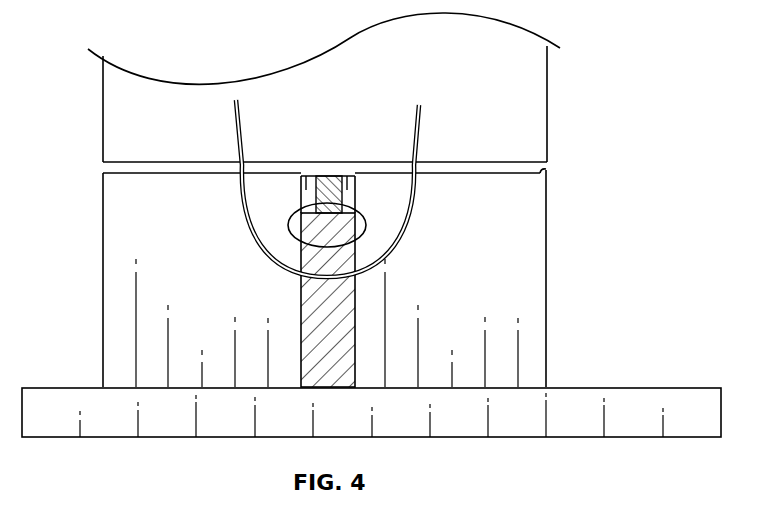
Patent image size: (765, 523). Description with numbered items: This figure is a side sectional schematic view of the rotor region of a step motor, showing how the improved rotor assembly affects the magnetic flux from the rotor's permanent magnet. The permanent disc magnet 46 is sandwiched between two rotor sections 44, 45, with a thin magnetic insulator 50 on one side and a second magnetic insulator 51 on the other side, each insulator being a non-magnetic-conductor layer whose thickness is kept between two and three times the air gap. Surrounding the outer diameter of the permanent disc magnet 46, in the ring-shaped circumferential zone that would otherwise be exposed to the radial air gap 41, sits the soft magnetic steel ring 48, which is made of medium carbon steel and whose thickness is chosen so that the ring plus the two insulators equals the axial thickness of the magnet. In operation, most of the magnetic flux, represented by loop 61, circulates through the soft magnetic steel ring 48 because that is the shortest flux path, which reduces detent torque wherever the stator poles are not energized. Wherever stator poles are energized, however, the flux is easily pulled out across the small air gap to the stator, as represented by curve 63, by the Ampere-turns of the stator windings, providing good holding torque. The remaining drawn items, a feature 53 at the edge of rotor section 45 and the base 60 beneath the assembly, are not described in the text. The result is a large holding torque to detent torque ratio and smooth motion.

The radial air gap 41 is at (318, 104).
The rotor section 44 is at (192, 243).
The rotor section 45 is at (500, 243).
The permanent disc magnet 46 is at (312, 283).
The soft magnetic steel ring 48 is at (327, 178).
The magnetic insulator 50 is at (304, 177).
The magnetic insulator 51 is at (350, 177).
The gap 53 is at (546, 169).
The base plate 60 is at (657, 393).
The flux loop 61 is at (358, 219).
The flux curve 63 is at (384, 253).